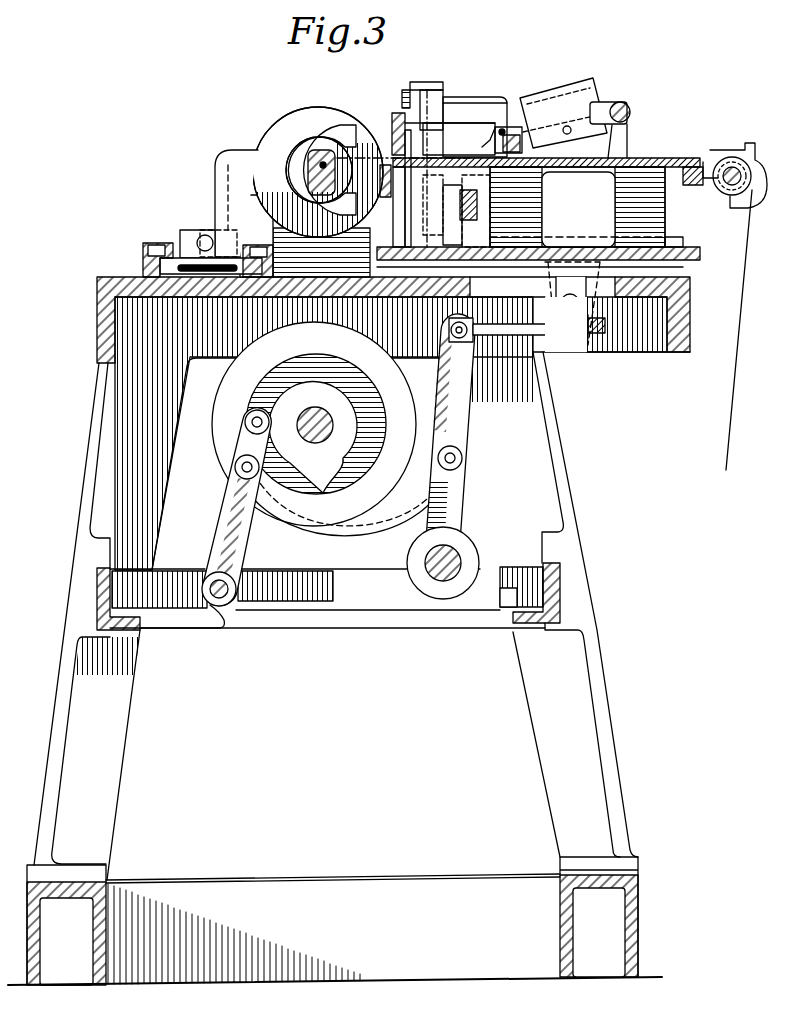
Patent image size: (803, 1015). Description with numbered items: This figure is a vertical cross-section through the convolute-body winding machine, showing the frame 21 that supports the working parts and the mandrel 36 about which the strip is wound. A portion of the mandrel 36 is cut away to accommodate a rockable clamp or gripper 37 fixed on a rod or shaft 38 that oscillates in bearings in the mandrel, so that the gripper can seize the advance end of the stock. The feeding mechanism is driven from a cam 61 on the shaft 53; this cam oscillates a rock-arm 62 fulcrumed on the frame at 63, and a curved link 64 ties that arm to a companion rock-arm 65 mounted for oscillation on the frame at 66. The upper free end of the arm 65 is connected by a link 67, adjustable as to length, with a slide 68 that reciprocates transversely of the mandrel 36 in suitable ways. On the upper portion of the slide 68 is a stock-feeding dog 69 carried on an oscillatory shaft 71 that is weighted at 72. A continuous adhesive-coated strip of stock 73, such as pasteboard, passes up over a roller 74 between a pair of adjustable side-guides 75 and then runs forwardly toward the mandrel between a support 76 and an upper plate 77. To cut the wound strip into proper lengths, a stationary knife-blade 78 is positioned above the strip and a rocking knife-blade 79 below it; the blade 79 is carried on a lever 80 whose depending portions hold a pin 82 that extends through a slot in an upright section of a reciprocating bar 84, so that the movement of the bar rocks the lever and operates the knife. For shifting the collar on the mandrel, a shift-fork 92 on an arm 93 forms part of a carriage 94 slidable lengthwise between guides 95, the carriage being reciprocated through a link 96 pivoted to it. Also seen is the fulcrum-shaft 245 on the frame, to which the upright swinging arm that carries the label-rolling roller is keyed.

The frame 21 is at (122, 277).
The mandrel 36 is at (292, 274).
The rockable clamp or gripper 37 is at (323, 160).
The rod or shaft 38 is at (310, 170).
The shaft 53 is at (315, 433).
The cam 61 is at (262, 380).
The rock-arm 62 is at (225, 531).
The fulcrum 63 is at (210, 590).
The curved link 64 is at (398, 500).
The companion rock-arm 65 is at (445, 376).
The fulcrum 66 is at (424, 578).
The link 67 is at (512, 326).
The slide 68 is at (600, 260).
The stock-feeding dog 69 is at (630, 140).
The oscillatory shaft 71 is at (630, 108).
The weight 72 is at (560, 100).
The strip or ribbon of stock 73 is at (746, 230).
The roller 74 is at (728, 158).
The adjustable side-guides 75 is at (752, 160).
The support 76 is at (466, 168).
The upper plate 77 is at (462, 155).
The stationary knife-blade 78 is at (395, 128).
The rocking knife-blade 79 is at (325, 268).
The lever 80 is at (470, 112).
The pin 82 is at (420, 228).
The bar 84 is at (487, 277).
The shift-fork 92 is at (343, 130).
The arm 93 is at (218, 188).
The carriage 94 is at (170, 275).
The guides 95 is at (165, 240).
The link 96 is at (205, 236).
The fulcrum-shaft 245 is at (440, 560).